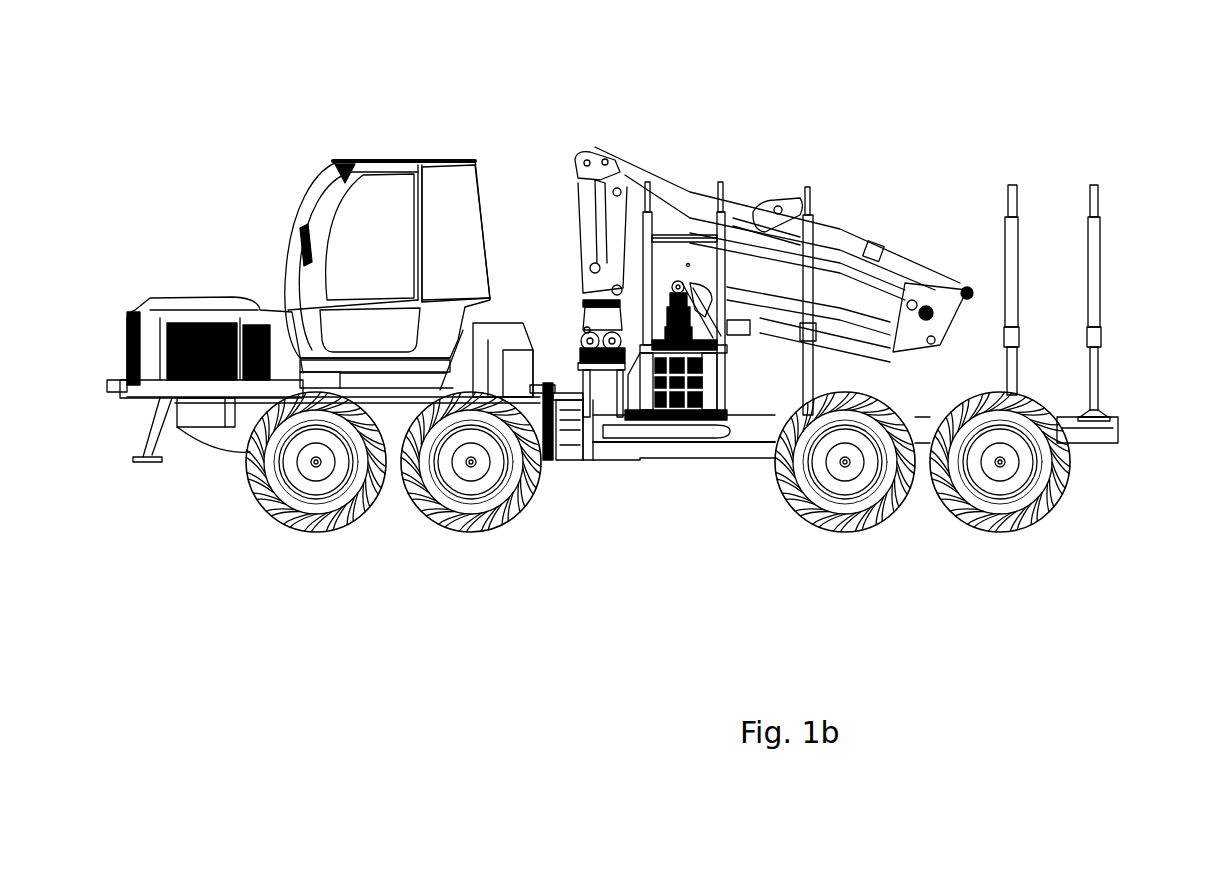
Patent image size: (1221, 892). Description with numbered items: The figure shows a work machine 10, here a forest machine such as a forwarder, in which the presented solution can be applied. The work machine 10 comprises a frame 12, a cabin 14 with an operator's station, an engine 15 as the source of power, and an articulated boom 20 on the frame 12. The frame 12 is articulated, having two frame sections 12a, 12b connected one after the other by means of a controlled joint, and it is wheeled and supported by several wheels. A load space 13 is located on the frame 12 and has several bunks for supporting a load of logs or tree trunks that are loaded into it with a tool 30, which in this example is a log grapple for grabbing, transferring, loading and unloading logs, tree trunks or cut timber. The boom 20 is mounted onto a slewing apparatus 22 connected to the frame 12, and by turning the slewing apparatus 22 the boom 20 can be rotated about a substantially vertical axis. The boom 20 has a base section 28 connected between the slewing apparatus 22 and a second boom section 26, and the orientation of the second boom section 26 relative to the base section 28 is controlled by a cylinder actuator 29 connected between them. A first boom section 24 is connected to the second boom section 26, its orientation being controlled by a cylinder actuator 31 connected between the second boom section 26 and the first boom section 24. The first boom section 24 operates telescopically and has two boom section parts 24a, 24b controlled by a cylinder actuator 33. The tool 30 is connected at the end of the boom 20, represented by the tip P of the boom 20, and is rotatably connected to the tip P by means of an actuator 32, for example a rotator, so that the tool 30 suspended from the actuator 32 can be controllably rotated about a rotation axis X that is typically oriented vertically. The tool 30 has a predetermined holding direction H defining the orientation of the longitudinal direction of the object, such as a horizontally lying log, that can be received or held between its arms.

The work machine 10 is at (282, 130).
The frame 12 is at (548, 533).
The frame section 12a is at (402, 478).
The frame section 12b is at (723, 440).
The load space 13 is at (1047, 345).
The cabin 14 is at (310, 210).
The engine 15 is at (175, 330).
The articulated boom 20 is at (602, 98).
The slewing apparatus 22 is at (586, 327).
The first boom section 24 is at (795, 348).
The boom section part 24a is at (737, 303).
The boom section part 24b is at (700, 288).
The second boom section 26 is at (730, 212).
The base section 28 is at (580, 192).
The cylinder actuator 29 is at (622, 252).
The tool 30 is at (665, 462).
The cylinder actuator 31 is at (857, 243).
The actuator 32 is at (658, 315).
The cylinder actuator 33 is at (847, 342).
The tip of the boom P is at (688, 263).
The rotation axis X is at (672, 462).
The holding direction H is at (1045, 573).